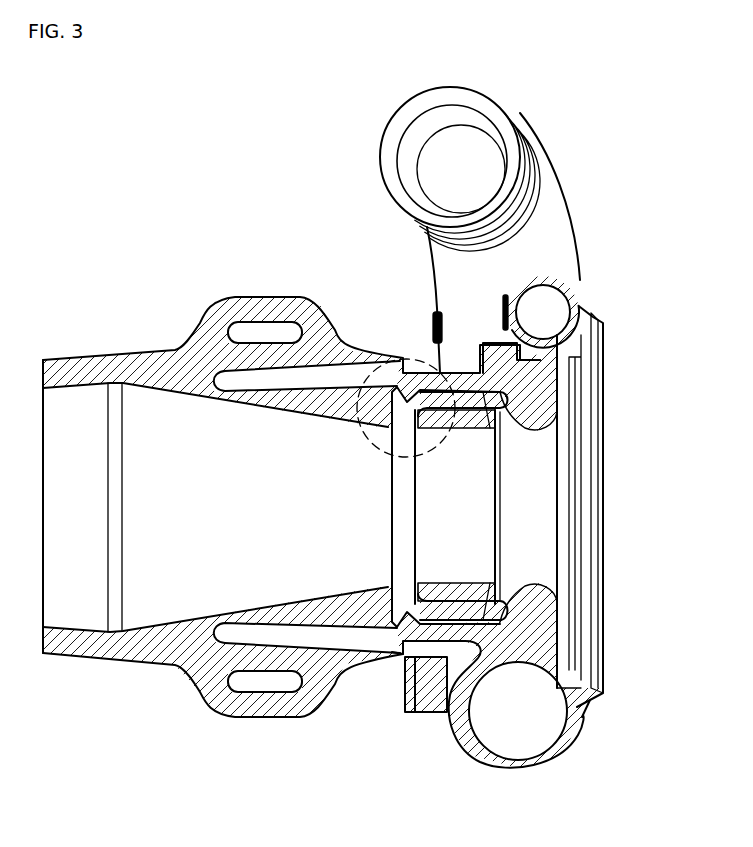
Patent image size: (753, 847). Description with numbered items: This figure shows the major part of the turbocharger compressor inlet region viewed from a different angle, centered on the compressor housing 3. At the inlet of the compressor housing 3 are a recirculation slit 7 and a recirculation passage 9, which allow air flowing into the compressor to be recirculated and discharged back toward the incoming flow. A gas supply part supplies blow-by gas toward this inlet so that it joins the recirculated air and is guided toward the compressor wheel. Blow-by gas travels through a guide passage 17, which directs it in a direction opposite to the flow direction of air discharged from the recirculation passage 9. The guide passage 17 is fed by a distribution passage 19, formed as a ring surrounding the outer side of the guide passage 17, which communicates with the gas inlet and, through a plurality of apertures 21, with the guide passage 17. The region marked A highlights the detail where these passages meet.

The compressor housing 3 is at (548, 247).
The recirculation slit 7 is at (498, 515).
The recirculation passage 9 is at (440, 610).
The guide passage 17 is at (275, 382).
The distribution passage 19 is at (260, 328).
The apertures 21 is at (323, 532).
The detail region A is at (480, 391).